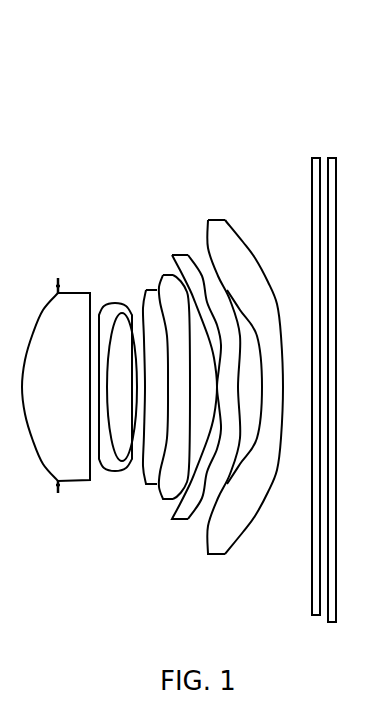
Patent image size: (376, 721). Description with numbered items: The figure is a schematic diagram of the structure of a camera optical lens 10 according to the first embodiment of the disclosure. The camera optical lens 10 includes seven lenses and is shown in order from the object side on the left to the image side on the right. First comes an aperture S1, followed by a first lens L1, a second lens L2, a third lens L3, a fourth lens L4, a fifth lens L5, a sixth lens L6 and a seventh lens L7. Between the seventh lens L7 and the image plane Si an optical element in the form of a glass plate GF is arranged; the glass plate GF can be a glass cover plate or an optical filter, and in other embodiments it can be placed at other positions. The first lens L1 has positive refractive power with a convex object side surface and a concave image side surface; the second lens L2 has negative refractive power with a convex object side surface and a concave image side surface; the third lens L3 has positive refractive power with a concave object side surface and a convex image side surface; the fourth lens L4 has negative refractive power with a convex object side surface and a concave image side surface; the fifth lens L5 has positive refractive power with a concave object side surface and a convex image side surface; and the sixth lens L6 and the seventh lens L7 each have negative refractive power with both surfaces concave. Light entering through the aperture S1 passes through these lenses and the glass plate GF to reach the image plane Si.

The camera optical lens 10 is at (200, 55).
The aperture S1 is at (43, 385).
The first lens L1 is at (56, 376).
The second lens L2 is at (114, 381).
The third lens L3 is at (122, 377).
The fourth lens L4 is at (145, 378).
The fifth lens L5 is at (170, 376).
The sixth lens L6 is at (196, 376).
The seventh lens L7 is at (245, 376).
The glass plate GF is at (312, 373).
The image plane Si is at (331, 374).